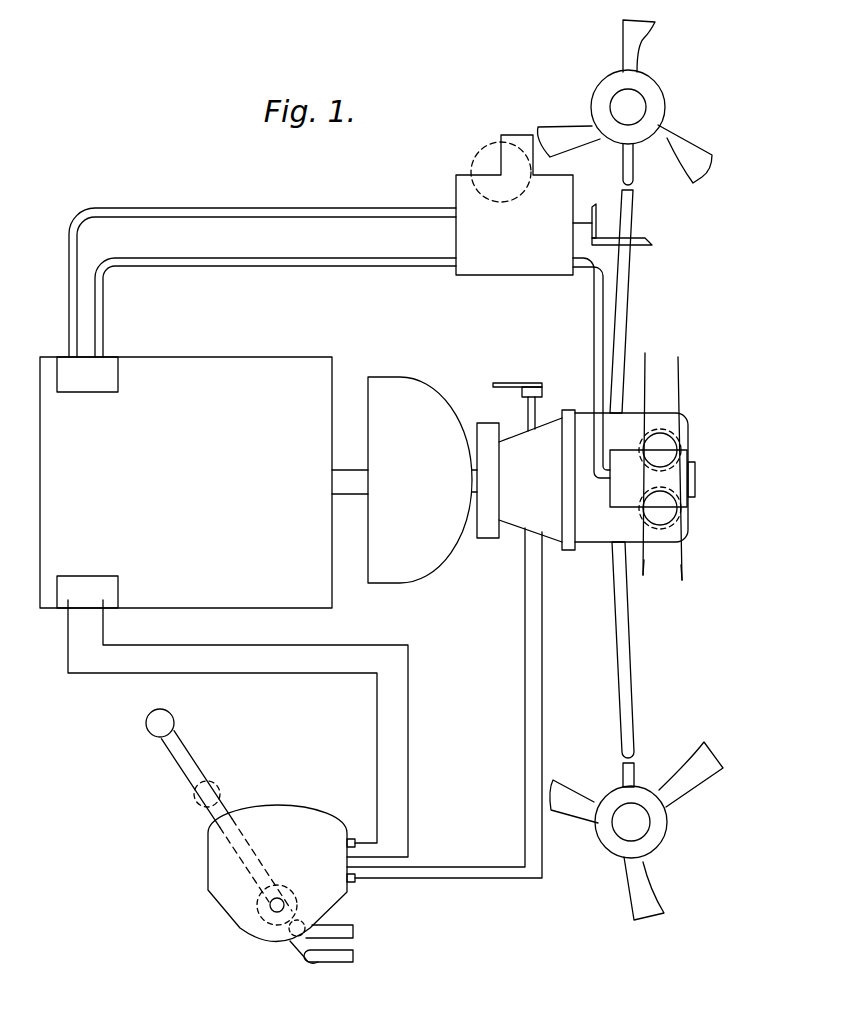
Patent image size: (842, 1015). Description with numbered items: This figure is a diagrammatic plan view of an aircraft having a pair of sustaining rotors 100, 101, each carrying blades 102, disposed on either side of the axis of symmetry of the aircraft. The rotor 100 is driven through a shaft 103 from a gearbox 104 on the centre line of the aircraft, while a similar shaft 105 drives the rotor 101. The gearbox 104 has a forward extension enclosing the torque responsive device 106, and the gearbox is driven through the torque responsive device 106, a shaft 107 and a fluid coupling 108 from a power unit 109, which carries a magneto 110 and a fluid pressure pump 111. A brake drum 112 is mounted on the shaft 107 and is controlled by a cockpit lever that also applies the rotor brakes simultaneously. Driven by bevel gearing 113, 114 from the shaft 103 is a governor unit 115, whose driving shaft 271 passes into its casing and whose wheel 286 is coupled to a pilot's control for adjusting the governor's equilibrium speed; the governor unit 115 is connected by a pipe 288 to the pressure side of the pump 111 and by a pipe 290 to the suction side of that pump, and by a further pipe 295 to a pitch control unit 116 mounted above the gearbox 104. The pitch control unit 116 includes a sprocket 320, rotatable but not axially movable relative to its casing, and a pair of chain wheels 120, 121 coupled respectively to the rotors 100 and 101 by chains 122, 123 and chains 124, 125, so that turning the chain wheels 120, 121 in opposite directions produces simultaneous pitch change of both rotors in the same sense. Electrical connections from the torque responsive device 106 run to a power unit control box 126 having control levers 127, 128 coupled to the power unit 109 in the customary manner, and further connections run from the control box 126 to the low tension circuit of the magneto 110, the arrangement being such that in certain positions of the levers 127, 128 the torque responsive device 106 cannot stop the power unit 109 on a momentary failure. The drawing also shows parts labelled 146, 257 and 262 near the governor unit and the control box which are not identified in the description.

The sustaining rotor 100 is at (625, 106).
The sustaining rotor 101 is at (627, 822).
The blades 102 is at (561, 137).
The shaft 103 is at (630, 173).
The shaft 105 is at (630, 768).
The gearbox 104 is at (625, 435).
The torque responsive device 106 is at (454, 648).
The shaft 107 is at (474, 468).
The fluid coupling 108 is at (420, 480).
The power unit 109 is at (204, 482).
The magneto 110 is at (107, 594).
The fluid pressure pump 111 is at (97, 380).
The brake drum 112 is at (490, 526).
The bevel gearing 113 is at (641, 245).
The bevel gearing 114 is at (597, 222).
The governor unit 115 is at (514, 205).
The pitch control unit 116 is at (623, 490).
The chain wheel 120 is at (656, 432).
The chain wheel 121 is at (645, 522).
The chain 122 is at (645, 362).
The chain 123 is at (678, 357).
The chain 124 is at (643, 572).
The chain 125 is at (680, 567).
The power unit control box 126 is at (246, 905).
The control lever 127 is at (191, 771).
The control lever 128 is at (236, 782).
The valve 146 is at (522, 383).
The fitting 257 is at (342, 931).
The fitting 262 is at (342, 957).
The driving shaft 271 is at (584, 222).
The wheel 286 is at (478, 160).
The pipe 288 is at (283, 210).
The pipe 290 is at (308, 259).
The pipe 295 is at (594, 319).
The sprocket 320 is at (688, 478).